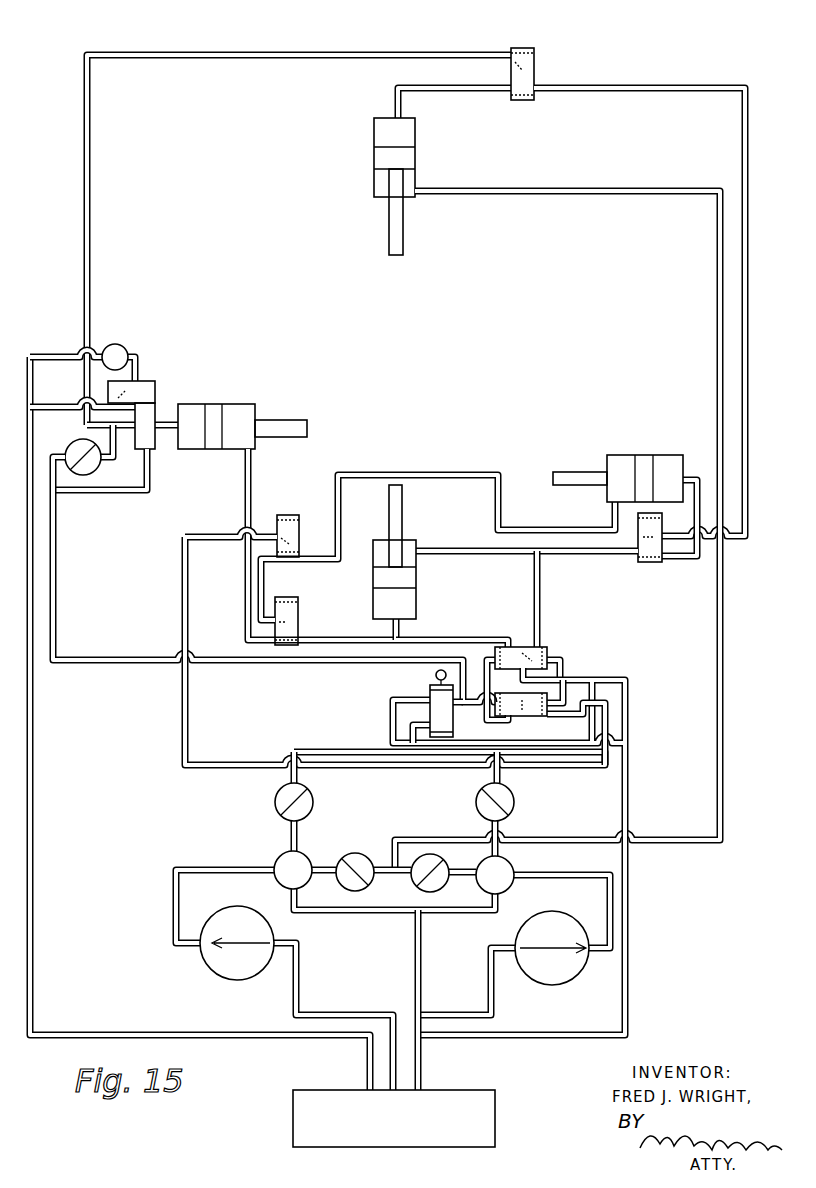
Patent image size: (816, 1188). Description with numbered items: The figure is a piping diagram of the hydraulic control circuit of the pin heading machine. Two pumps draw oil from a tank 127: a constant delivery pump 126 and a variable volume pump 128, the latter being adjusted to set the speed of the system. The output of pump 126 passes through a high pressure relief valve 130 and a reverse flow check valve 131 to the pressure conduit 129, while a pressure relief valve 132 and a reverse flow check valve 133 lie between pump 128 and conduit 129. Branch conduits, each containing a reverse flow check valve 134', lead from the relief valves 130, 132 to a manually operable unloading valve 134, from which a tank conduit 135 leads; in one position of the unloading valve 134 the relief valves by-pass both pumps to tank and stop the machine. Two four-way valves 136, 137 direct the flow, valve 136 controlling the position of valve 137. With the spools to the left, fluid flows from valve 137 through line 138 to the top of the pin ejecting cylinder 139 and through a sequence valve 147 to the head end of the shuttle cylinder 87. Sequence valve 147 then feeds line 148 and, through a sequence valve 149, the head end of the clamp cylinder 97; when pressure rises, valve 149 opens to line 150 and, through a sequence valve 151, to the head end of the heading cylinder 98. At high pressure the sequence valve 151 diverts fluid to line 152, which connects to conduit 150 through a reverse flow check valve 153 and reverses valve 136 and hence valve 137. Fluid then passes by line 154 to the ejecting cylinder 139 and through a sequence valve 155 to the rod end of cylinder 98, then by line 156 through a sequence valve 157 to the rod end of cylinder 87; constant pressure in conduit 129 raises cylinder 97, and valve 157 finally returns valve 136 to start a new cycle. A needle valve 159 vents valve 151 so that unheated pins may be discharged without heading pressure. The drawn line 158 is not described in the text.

The double acting hydraulic cylinder or motor 87 is at (660, 465).
The double acting hydraulic cylinder or motor 97 is at (384, 128).
The pin heading cylinder or motor 98 is at (244, 410).
The constant delivery pump 126 is at (245, 978).
The tank 127 is at (462, 1100).
The variable volume pump 128 is at (563, 982).
The pressure conduit 129 is at (608, 194).
The high pressure relief valve 130 is at (303, 864).
The reverse flow check valve 131 is at (357, 854).
The pressure relief valve 132 is at (513, 878).
The reverse flow check valve 133 is at (445, 890).
The manually operable unloading valve 134 is at (426, 706).
The reverse flow check valve 134' is at (392, 804).
The tank conduit or pipe 135 is at (576, 672).
The four-way valve 136 is at (519, 701).
The four-way valve 137 is at (543, 648).
The line, pipe or conduit 138 is at (540, 615).
The pin ejecting cylinder 139 is at (418, 602).
The sequence valve 147 is at (660, 556).
The line, pipe or conduit 148 is at (661, 312).
The sequence valve 149 is at (530, 82).
The line, pipe or conduit 150 is at (300, 53).
The sequence valve 151 is at (150, 420).
The line, pipe or conduit 152 is at (53, 578).
The reverse flow check valve 153 is at (68, 450).
The line, pipe or conduit 154 is at (485, 640).
The sequence valve 155 is at (248, 500).
The line, pipe or conduit 156 is at (381, 470).
The sequence valve 157 is at (295, 533).
The fluid line 158 is at (183, 570).
The needle valve 159 is at (128, 350).